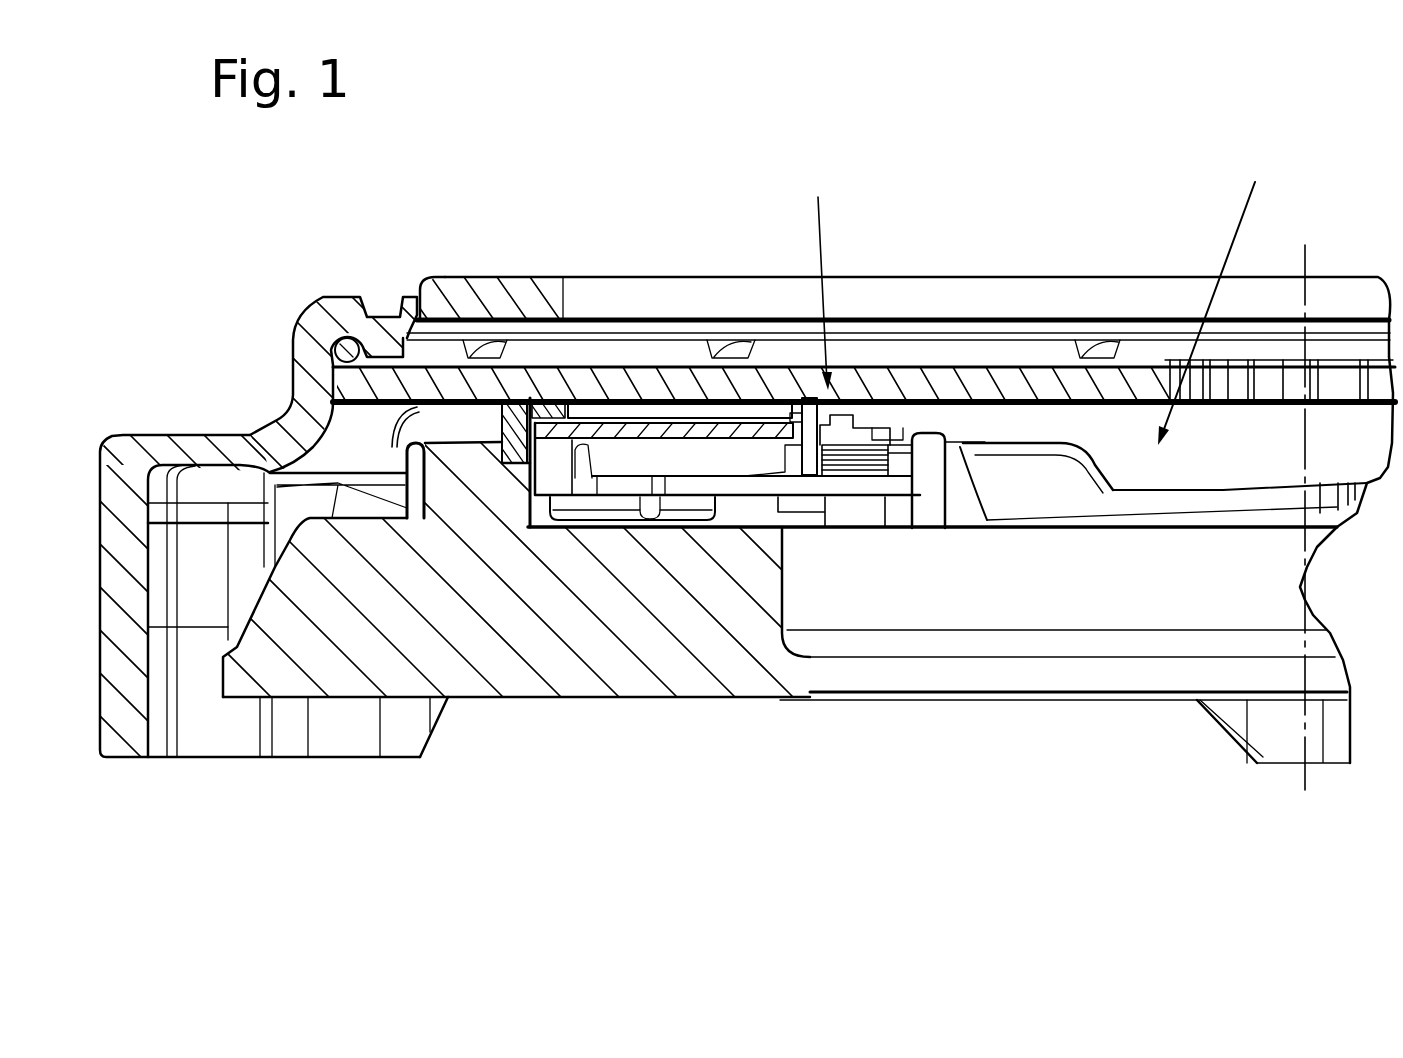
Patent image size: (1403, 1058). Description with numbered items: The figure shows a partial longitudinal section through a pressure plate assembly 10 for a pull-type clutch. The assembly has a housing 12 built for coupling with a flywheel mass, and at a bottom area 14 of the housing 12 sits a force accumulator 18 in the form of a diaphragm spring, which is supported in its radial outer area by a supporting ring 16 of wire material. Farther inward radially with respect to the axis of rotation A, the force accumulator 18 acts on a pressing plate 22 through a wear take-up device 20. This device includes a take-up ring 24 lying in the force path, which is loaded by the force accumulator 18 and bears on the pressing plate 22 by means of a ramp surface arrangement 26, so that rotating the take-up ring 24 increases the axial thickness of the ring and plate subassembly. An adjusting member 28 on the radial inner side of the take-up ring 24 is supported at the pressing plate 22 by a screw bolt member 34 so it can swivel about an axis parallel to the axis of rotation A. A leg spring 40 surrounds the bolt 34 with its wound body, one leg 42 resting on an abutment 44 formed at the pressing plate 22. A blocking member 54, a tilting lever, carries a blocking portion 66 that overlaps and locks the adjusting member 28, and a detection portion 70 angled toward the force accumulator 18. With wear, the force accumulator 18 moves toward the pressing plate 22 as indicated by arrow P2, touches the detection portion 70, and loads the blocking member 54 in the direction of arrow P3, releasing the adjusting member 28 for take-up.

The pressure plate assembly 10 is at (1210, 115).
The housing 12 is at (187, 433).
The bottom area 14 is at (1260, 277).
The supporting ring 16 is at (300, 300).
The force accumulator 18 is at (602, 380).
The wear take-up device 20 is at (512, 500).
The pressing plate 22 is at (673, 650).
The take-up ring 24 is at (440, 330).
The ramp surface arrangement 26 is at (1223, 490).
The adjusting member 28 is at (745, 497).
The screw bolt member 34 is at (857, 427).
The leg spring 40 is at (883, 427).
The leg 42 is at (977, 433).
The abutment 44 is at (932, 520).
The blocking member 54 is at (707, 420).
The blocking portion 66 is at (527, 398).
The detection portion 70 is at (800, 405).
The arrow P2 is at (1245, 205).
The arrow P3 is at (828, 210).
The axis of rotation A is at (1305, 265).